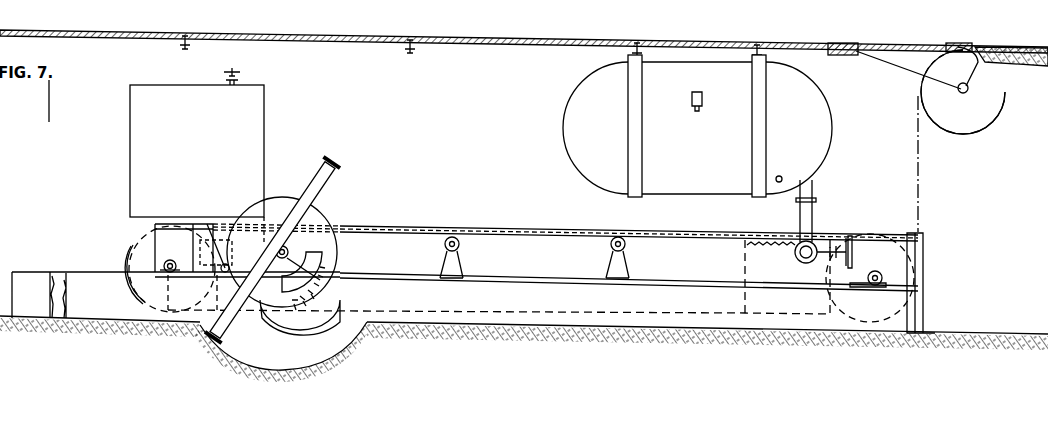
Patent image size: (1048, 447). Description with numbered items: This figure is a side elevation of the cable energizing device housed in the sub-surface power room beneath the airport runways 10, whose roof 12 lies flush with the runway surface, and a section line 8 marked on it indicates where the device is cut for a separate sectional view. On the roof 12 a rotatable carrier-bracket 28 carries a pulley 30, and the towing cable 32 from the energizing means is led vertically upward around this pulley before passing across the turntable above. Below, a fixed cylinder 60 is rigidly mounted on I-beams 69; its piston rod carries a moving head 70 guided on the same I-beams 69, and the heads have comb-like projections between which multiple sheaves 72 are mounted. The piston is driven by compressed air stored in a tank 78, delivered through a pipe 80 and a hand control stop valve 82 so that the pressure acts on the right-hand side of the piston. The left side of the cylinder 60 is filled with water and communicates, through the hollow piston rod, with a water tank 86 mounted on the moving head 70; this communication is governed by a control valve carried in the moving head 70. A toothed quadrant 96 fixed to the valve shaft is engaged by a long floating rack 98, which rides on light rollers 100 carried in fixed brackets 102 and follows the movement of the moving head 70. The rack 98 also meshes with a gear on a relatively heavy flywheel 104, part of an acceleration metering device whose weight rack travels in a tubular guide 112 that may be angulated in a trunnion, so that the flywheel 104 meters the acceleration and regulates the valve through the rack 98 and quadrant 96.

The section line 8 is at (112, 265).
The runways 10 is at (294, 353).
The roof 12 is at (509, 44).
The rotatable carrier-bracket 28 is at (896, 50).
The pulley 30 is at (988, 118).
The towing cable 32 is at (922, 151).
The fixed cylinder 60 is at (603, 314).
The I-beams 69 is at (67, 280).
The moving head 70 is at (150, 233).
The sheaves 72 is at (131, 262).
The tank 78 is at (824, 133).
The pipe 80 is at (816, 214).
The hand control stop valve 82 is at (838, 246).
The tank 86 is at (266, 140).
The toothed quadrant 96 is at (207, 262).
The floating rack 98 is at (218, 252).
The rollers 100 is at (460, 246).
The fixed brackets 102 is at (445, 263).
The flywheel 104 is at (328, 217).
The tubular guide 112 is at (326, 199).